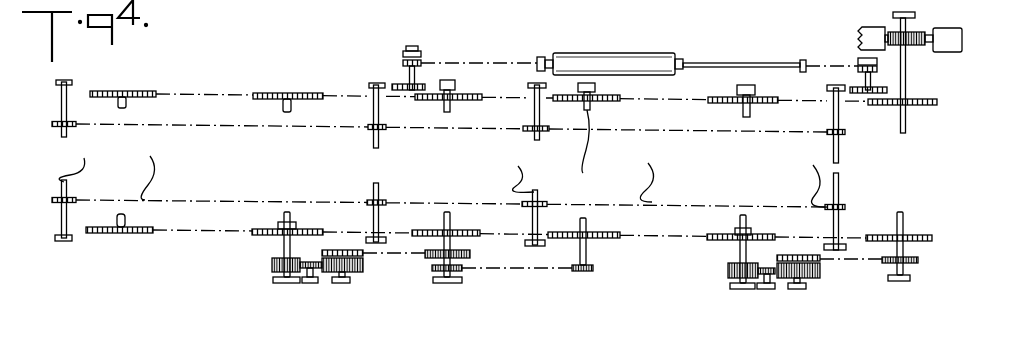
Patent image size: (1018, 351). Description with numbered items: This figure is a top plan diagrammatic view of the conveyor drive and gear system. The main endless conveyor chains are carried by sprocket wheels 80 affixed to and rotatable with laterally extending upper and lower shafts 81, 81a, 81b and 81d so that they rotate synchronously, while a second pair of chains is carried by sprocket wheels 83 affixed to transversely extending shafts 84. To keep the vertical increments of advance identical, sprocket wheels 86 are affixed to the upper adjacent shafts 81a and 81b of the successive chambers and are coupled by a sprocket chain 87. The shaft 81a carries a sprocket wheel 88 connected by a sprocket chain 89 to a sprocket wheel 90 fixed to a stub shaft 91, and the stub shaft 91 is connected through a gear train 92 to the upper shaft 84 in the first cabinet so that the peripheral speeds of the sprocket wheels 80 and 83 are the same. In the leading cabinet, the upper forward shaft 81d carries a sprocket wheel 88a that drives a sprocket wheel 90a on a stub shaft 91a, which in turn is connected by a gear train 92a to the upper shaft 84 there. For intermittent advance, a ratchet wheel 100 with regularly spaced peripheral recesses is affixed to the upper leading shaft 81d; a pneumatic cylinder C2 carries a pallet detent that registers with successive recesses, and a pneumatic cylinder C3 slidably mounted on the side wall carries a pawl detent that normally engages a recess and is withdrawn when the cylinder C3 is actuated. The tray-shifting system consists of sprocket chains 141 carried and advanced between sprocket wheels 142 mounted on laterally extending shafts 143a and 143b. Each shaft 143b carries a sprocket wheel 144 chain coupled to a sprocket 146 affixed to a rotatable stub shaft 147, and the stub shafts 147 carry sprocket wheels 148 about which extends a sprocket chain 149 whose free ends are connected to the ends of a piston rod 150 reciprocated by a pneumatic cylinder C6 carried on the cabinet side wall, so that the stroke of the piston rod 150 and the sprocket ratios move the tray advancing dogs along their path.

The sprocket wheel 80 is at (108, 92).
The shaft 81 is at (127, 101).
The shaft 81a is at (447, 212).
The shaft 81b is at (583, 218).
The upper forward shaft 81d is at (907, 128).
The sprocket wheel 83 is at (275, 93).
The shaft 84 is at (288, 112).
The sprocket wheel 86 is at (455, 272).
The sprocket chain 87 is at (530, 270).
The sprocket wheel 88 is at (468, 253).
The sprocket wheel 88a is at (920, 261).
The sprocket chain 89 is at (396, 255).
The sprocket wheel 90 is at (345, 250).
The sprocket wheel 90a is at (797, 255).
The stub shaft 91 is at (345, 283).
The stub shaft 91a is at (805, 289).
The gear train 92 is at (311, 256).
The gear train 92a is at (768, 261).
The ratchet wheel 100 is at (925, 32).
The sprocket chain 141 is at (176, 126).
The sprocket wheel 142 is at (74, 128).
The shaft 143a is at (62, 100).
The shaft 143b is at (373, 110).
The sprocket wheel 144 is at (369, 86).
The sprocket 146 is at (426, 83).
The stub shaft 147 is at (409, 75).
The sprocket wheel 148 is at (422, 53).
The sprocket chain 149 is at (495, 62).
The piston rod 150 is at (712, 53).
The pneumatic cylinder C2 is at (958, 32).
The pneumatic cylinder C3 is at (874, 27).
The pneumatic cylinder C6 is at (606, 60).